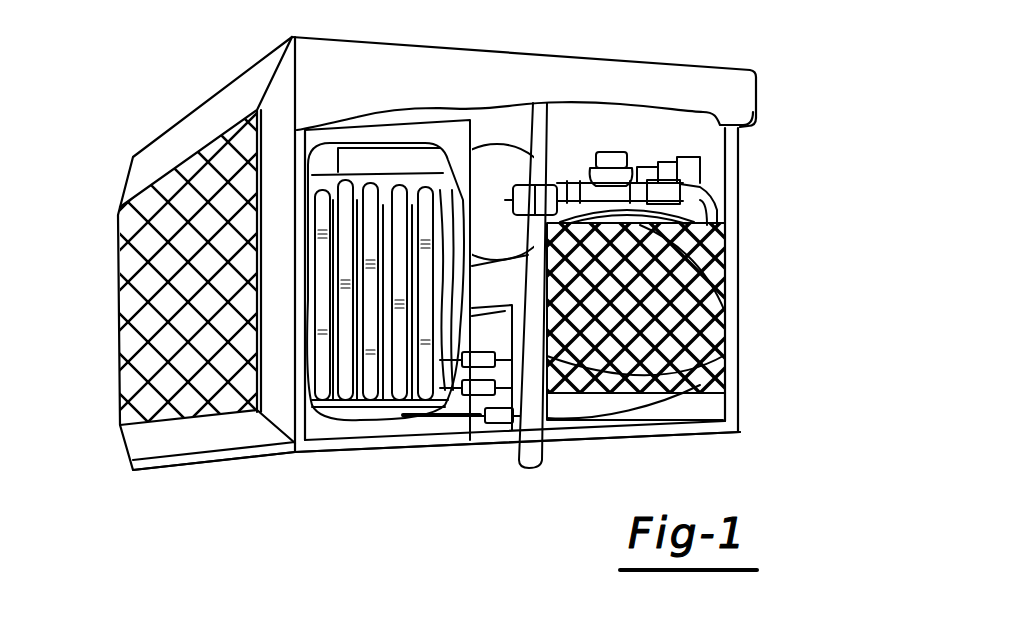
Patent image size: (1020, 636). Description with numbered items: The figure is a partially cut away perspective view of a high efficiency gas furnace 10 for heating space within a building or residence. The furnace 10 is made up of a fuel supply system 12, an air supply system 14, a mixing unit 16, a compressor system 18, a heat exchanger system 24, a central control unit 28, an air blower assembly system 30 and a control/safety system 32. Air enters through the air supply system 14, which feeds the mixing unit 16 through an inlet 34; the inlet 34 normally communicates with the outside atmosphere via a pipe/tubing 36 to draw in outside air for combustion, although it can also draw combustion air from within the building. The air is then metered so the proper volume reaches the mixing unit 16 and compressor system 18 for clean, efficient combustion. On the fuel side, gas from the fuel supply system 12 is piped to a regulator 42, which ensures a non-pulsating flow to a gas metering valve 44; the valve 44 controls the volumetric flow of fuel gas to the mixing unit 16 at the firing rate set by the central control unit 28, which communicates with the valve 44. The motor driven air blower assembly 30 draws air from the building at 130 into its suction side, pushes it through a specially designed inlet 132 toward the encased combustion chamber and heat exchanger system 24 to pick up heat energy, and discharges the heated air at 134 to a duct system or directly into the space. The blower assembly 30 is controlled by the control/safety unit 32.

The high efficiency gas furnace 10 is at (458, 251).
The fuel supply system 12 is at (710, 217).
The air supply system 14 is at (540, 457).
The mixing unit 16 is at (556, 160).
The compressor system 18 is at (475, 150).
The heat exchanger system 24 is at (352, 408).
The central control unit 28 is at (607, 158).
The air blower assembly system 30 is at (730, 272).
The control/safety system 32 is at (687, 172).
The inlet 34 is at (545, 180).
The pipe/tubing 36 is at (545, 443).
The regulator 42 is at (685, 193).
The gas metering valve 44 is at (641, 165).
The building air intake 130 is at (730, 347).
The inlet 132 is at (485, 373).
The heated air exit 134 is at (225, 300).